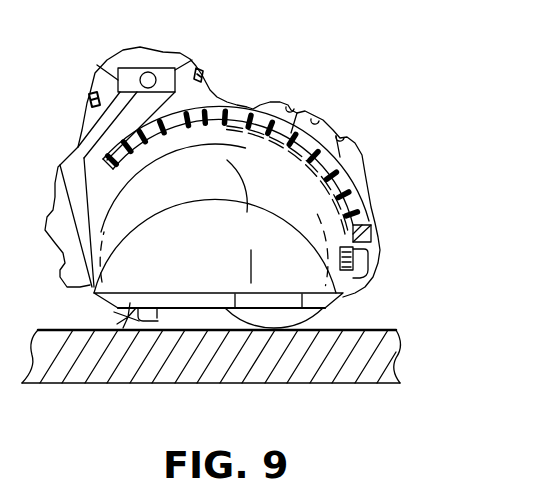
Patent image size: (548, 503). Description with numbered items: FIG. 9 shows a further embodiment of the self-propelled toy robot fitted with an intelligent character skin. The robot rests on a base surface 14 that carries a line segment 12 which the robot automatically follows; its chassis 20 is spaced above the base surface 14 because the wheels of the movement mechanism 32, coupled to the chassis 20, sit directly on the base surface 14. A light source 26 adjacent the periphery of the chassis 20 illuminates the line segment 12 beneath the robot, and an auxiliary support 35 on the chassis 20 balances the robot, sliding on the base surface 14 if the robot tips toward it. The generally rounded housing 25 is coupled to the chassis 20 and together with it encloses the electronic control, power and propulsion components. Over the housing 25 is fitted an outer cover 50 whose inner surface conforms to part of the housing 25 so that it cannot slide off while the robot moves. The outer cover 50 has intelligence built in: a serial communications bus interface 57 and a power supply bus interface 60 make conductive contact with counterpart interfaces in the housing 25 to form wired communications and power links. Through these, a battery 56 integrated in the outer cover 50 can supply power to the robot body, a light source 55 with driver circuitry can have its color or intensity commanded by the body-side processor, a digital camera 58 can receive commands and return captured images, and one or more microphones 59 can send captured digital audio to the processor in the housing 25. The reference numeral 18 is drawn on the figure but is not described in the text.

The line segment 12 is at (49, 320).
The base surface 14 is at (365, 330).
The ground body 18 is at (350, 375).
The chassis 20 is at (118, 306).
The housing 25 is at (140, 194).
The light source 26 is at (122, 320).
The movement mechanism 32 is at (266, 313).
The auxiliary support 35 is at (155, 322).
The outer cover 50 is at (357, 148).
The light source 55 is at (340, 137).
The battery 56 is at (213, 115).
The serial communications bus interface 57 is at (362, 233).
The digital camera 58 is at (128, 78).
The microphone 59 is at (88, 96).
The power supply bus interface 60 is at (360, 253).